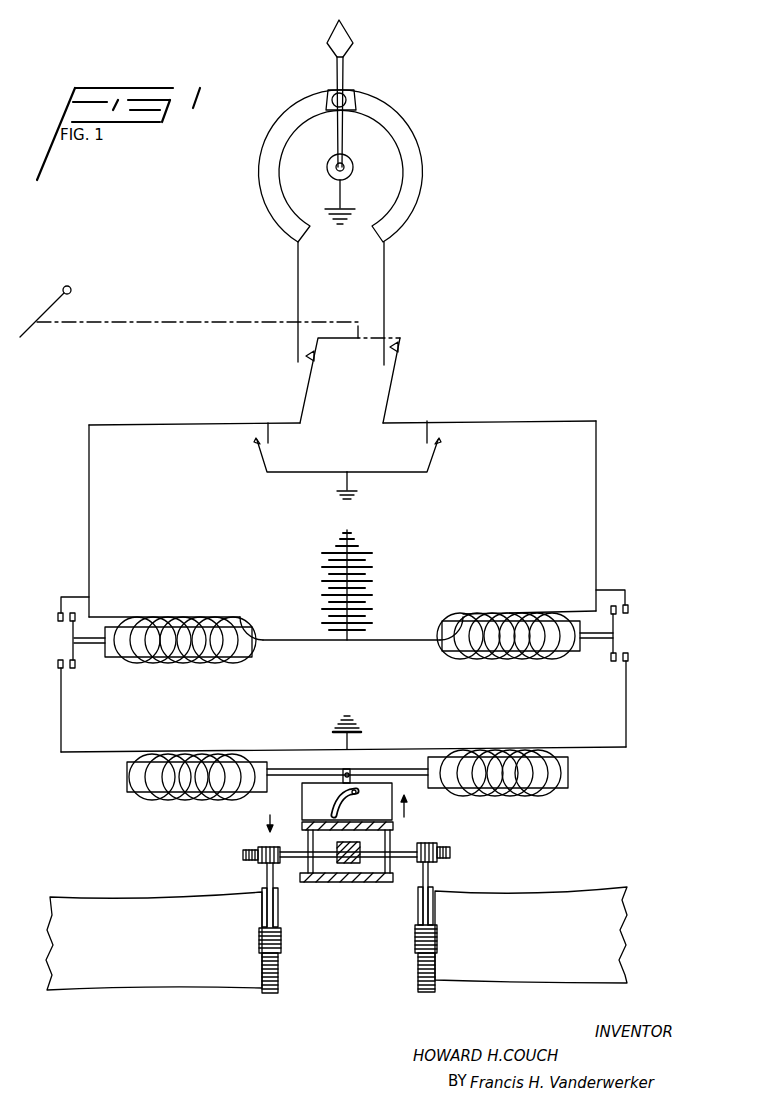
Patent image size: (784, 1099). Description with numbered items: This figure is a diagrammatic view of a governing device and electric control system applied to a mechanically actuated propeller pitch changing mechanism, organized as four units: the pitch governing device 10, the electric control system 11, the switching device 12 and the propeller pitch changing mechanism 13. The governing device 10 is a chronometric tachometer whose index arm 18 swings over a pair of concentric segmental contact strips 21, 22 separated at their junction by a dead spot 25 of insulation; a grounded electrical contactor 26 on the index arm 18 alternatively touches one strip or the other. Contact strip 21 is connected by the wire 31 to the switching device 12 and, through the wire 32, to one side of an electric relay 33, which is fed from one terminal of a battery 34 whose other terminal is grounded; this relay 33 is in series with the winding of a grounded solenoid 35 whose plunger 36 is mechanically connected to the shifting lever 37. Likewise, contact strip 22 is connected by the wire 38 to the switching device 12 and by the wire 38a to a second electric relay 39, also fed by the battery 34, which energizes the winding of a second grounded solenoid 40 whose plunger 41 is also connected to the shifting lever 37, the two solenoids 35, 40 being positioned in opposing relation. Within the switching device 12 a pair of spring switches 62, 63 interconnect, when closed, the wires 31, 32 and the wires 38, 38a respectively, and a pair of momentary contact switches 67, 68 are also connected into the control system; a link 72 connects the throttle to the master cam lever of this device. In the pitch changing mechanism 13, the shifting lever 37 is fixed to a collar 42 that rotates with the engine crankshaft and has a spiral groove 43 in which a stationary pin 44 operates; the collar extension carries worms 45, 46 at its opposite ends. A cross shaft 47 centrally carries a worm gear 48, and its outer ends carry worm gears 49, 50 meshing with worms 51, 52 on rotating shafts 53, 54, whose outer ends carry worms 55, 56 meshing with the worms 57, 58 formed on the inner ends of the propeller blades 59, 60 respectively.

The pitch governing device 10 is at (353, 126).
The electric control system 11 is at (348, 501).
The switching device 12 is at (408, 380).
The propeller pitch changing mechanism 13 is at (333, 825).
The index arm 18 is at (343, 40).
The contact strip 21 is at (267, 180).
The contact strip 22 is at (395, 127).
The dead spot 25 is at (353, 108).
The electrical contactor 26 is at (357, 90).
The wire 31 is at (297, 277).
The wire 32 is at (87, 472).
The electric relay 33 is at (178, 613).
The battery 34 is at (367, 585).
The solenoid 35 is at (183, 752).
The plunger 36 is at (242, 772).
The shifting lever 37 is at (345, 772).
The wire 38 is at (385, 288).
The wire 38a is at (519, 421).
The second electric relay 39 is at (500, 613).
The solenoid 40 is at (510, 752).
The plunger 41 is at (438, 772).
The collar 42 is at (313, 810).
The spiral groove 43 is at (330, 797).
The stationary pin 44 is at (352, 790).
The worm 45 is at (323, 884).
The worm 46 is at (366, 833).
The cross shaft 47 is at (388, 836).
The worm gear 48 is at (352, 865).
The worm gear 49 is at (243, 858).
The worm gear 50 is at (452, 858).
The worm 51 is at (245, 850).
The worm 52 is at (452, 848).
The rotating shaft 53 is at (266, 880).
The rotating shaft 54 is at (430, 873).
The worm 55 is at (259, 938).
The worm 56 is at (437, 932).
The worm 57 is at (275, 993).
The worm 58 is at (430, 993).
The propeller blade 59 is at (128, 973).
The propeller blade 60 is at (525, 967).
The spring switch 62 is at (307, 362).
The spring switch 63 is at (400, 338).
The momentary contact switch 67 is at (258, 458).
The momentary contact switch 68 is at (430, 458).
The link 72 is at (138, 322).